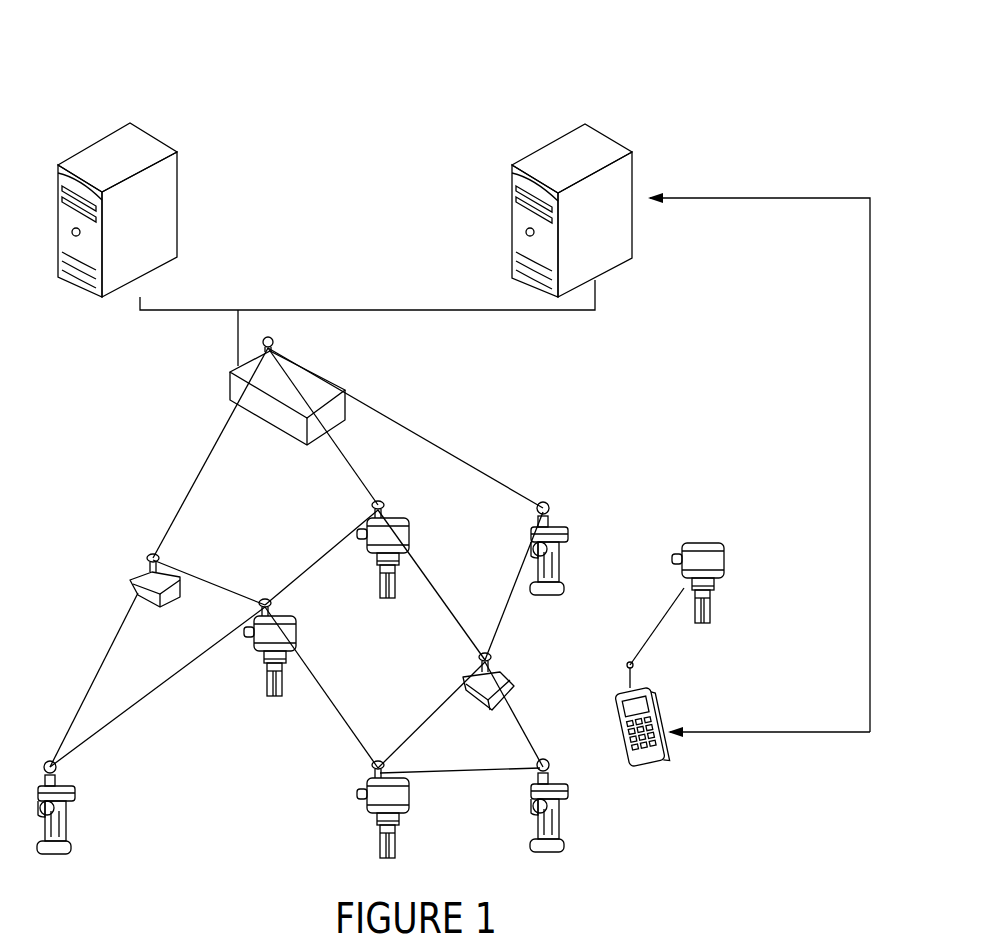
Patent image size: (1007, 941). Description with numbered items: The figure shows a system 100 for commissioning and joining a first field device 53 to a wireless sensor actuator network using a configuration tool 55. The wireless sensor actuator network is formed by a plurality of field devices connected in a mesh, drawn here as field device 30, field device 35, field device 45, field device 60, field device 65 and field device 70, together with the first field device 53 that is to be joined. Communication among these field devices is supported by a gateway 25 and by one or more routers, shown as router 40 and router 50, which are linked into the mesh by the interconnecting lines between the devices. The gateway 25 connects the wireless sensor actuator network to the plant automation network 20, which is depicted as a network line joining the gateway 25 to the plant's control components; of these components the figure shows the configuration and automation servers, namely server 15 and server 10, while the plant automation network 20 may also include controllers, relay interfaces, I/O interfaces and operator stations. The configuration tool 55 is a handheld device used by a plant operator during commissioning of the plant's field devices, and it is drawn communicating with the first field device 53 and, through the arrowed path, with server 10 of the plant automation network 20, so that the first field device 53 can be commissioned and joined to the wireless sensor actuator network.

The system 100 is at (812, 80).
The server 10 is at (632, 177).
The server 15 is at (177, 175).
The plant automation network 20 is at (340, 250).
The gateway 25 is at (340, 392).
The field device 30 is at (408, 523).
The field device 35 is at (567, 533).
The router 40 is at (168, 570).
The field device 45 is at (297, 630).
The router 50 is at (500, 672).
The first field device 53 is at (725, 555).
The configuration tool 55 is at (652, 692).
The field device 60 is at (75, 793).
The field device 65 is at (408, 820).
The field device 70 is at (557, 830).